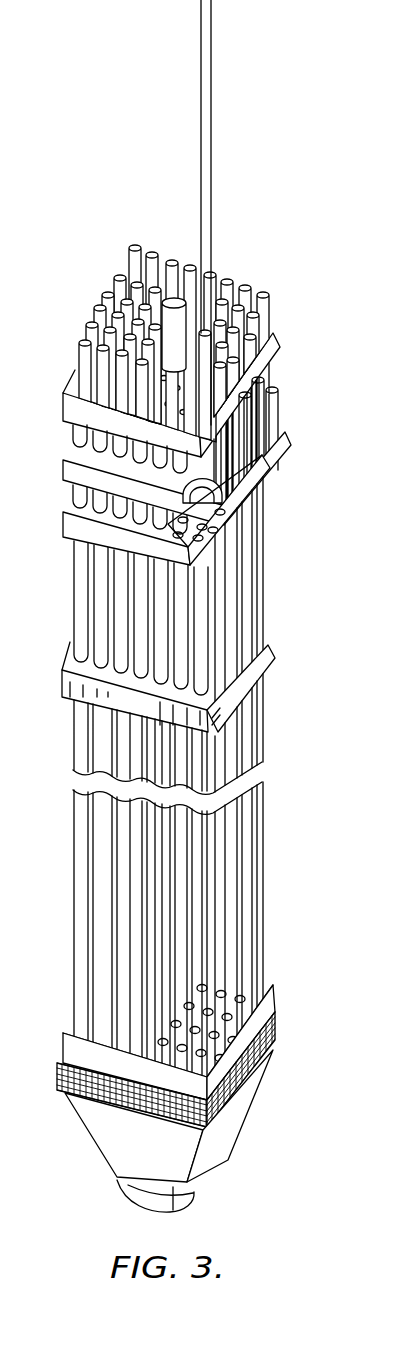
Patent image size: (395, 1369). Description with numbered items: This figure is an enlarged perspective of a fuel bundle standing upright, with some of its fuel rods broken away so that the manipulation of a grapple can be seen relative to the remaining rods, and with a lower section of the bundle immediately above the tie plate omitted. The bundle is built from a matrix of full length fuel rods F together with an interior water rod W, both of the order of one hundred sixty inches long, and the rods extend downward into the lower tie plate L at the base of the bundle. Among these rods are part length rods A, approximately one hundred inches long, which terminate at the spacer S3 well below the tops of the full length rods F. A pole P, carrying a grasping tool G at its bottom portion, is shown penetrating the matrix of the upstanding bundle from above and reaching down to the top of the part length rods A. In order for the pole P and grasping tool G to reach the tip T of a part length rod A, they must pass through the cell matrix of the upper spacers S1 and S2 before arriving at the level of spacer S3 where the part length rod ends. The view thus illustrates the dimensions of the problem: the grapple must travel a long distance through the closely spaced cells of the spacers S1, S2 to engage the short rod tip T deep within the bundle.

The pole P is at (212, 88).
The water rod W is at (127, 303).
The spacer S1 is at (258, 378).
The spacer S2 is at (266, 441).
The full length fuel rods F is at (135, 471).
The tip T is at (226, 491).
The spacer S3 is at (232, 517).
The part length rod A is at (222, 521).
The grasping tool G is at (228, 540).
The lower tie plate L is at (232, 1056).